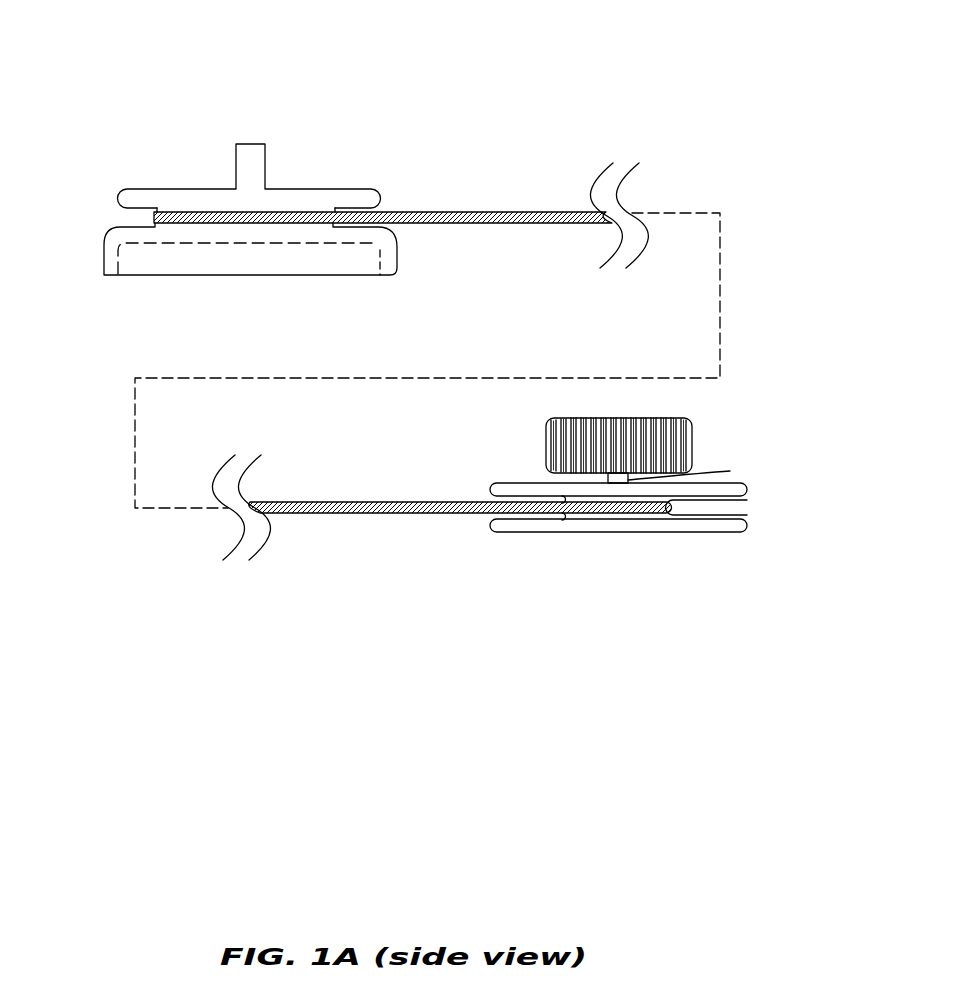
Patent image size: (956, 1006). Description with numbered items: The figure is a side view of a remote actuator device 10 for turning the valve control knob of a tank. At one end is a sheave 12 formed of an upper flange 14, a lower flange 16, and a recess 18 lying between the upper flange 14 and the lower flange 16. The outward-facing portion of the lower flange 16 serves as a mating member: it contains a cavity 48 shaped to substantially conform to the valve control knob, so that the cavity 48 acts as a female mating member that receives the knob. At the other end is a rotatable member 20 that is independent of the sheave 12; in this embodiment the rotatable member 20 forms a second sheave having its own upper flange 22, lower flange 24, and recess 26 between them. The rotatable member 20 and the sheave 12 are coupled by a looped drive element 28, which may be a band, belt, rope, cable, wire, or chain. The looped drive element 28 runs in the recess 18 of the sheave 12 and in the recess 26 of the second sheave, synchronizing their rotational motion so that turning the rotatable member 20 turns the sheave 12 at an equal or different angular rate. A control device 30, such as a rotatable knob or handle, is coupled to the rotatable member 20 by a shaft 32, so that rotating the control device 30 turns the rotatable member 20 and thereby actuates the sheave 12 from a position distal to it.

The remote actuator device 10 is at (150, 90).
The sheave 12 is at (253, 224).
The upper flange 14 is at (137, 188).
The lower flange 16 is at (397, 247).
The recess 18 is at (118, 219).
The cavity 48 is at (212, 267).
The looped drive element 28 is at (500, 212).
The rotatable member 20 is at (615, 481).
The upper flange 22 is at (503, 483).
The lower flange 24 is at (505, 533).
The recess 26 is at (733, 507).
The control device 30 is at (692, 443).
The shaft 32 is at (642, 480).